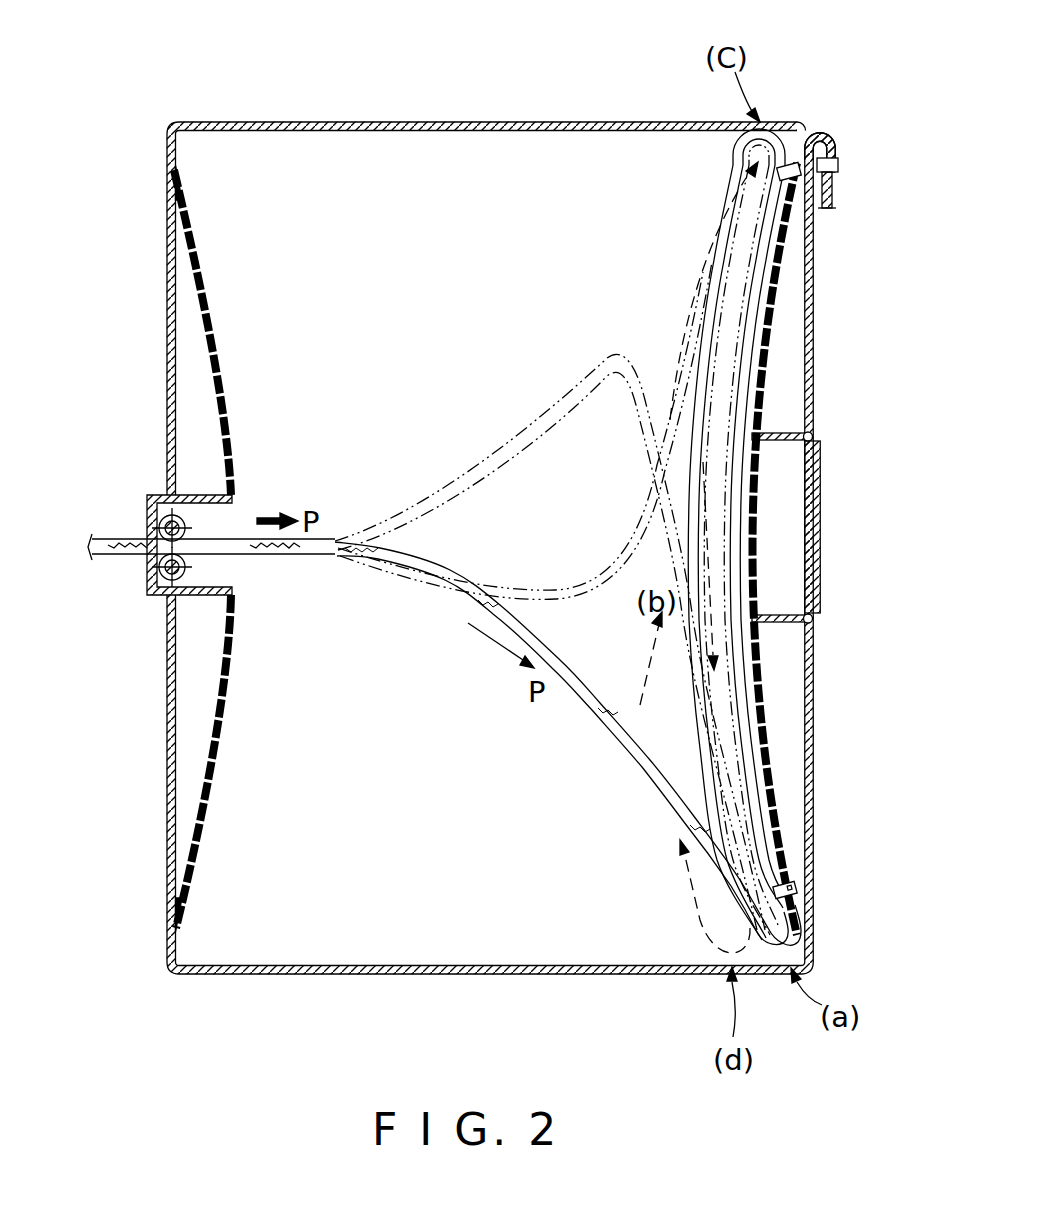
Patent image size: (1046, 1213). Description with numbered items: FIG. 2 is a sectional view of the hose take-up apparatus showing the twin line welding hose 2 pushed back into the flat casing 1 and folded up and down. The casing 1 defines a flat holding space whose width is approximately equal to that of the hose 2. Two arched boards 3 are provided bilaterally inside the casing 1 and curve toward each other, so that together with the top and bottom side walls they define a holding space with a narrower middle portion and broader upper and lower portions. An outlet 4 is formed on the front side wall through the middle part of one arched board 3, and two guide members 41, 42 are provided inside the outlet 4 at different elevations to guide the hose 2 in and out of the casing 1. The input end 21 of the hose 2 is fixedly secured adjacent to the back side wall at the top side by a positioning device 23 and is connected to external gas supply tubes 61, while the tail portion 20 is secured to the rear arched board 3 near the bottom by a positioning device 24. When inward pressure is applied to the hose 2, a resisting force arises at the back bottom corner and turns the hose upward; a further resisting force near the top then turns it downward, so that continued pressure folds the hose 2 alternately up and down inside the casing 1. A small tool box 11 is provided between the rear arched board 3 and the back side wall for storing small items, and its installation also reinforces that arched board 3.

The flat casing 1 is at (512, 122).
The twin line welding hose 2 is at (402, 565).
The arched boards 3 is at (214, 392).
The outlet 4 is at (212, 522).
The small tool box 11 is at (773, 543).
The tail portion 20 is at (745, 466).
The input end 21 is at (823, 132).
The positioning device 23 is at (786, 160).
The positioning device 24 is at (797, 885).
The guide member 41 is at (150, 516).
The guide member 42 is at (148, 580).
The external gas supply tubes 61 is at (834, 192).